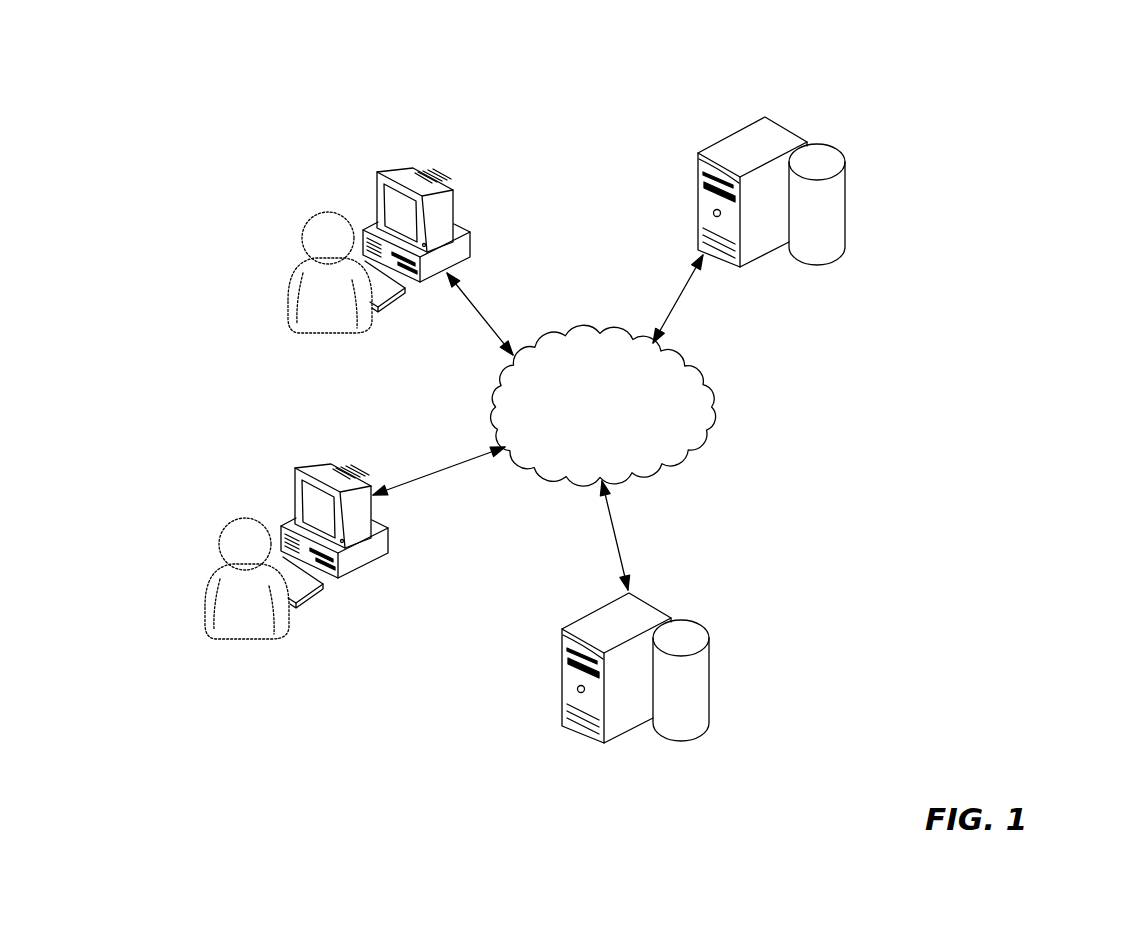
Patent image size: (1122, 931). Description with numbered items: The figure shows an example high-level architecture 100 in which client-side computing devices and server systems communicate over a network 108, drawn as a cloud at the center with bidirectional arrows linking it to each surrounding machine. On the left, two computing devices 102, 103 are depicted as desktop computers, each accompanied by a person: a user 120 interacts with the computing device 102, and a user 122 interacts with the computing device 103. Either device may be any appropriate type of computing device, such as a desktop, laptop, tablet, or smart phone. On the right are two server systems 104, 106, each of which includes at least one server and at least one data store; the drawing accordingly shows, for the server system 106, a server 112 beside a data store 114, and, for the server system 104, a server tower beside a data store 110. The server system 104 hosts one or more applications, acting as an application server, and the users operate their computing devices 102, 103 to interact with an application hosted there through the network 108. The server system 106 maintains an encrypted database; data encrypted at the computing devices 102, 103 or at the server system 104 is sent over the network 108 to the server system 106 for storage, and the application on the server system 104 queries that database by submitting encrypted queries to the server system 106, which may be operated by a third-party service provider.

The high-level architecture 100 is at (1000, 263).
The computing device 102 is at (378, 172).
The computing device 103 is at (296, 468).
The server system 104 is at (718, 580).
The server system 106 is at (855, 113).
The network 108 is at (710, 400).
The data storage 110 is at (708, 665).
The server 112 is at (698, 218).
The data storage 114 is at (845, 200).
The user 120 is at (290, 272).
The user 122 is at (215, 572).